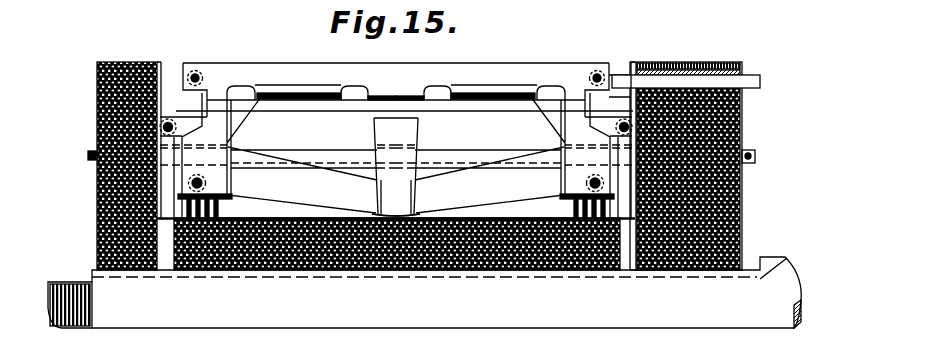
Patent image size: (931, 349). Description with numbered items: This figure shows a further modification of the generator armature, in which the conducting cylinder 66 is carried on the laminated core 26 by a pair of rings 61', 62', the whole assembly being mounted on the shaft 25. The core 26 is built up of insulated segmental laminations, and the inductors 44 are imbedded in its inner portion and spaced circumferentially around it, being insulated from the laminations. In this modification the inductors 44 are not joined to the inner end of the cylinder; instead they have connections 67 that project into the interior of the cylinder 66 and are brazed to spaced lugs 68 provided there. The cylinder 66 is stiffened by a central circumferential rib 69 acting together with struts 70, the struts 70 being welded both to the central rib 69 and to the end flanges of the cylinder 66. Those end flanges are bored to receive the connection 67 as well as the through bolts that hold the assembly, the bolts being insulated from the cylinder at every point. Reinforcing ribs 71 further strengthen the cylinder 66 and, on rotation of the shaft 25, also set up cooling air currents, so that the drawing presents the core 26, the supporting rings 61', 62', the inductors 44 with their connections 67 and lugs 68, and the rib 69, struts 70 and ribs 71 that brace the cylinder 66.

The shaft 25 is at (362, 322).
The laminated core 26 is at (372, 268).
The inductors 44 is at (761, 82).
The ring 61' is at (168, 184).
The ring 62' is at (620, 184).
The cylinder 66 is at (434, 72).
The connections 67 is at (351, 104).
The lugs 68 is at (278, 90).
The central circumferential rib 69 is at (409, 133).
The struts 70 is at (288, 166).
The reinforcing ribs 71 is at (233, 122).